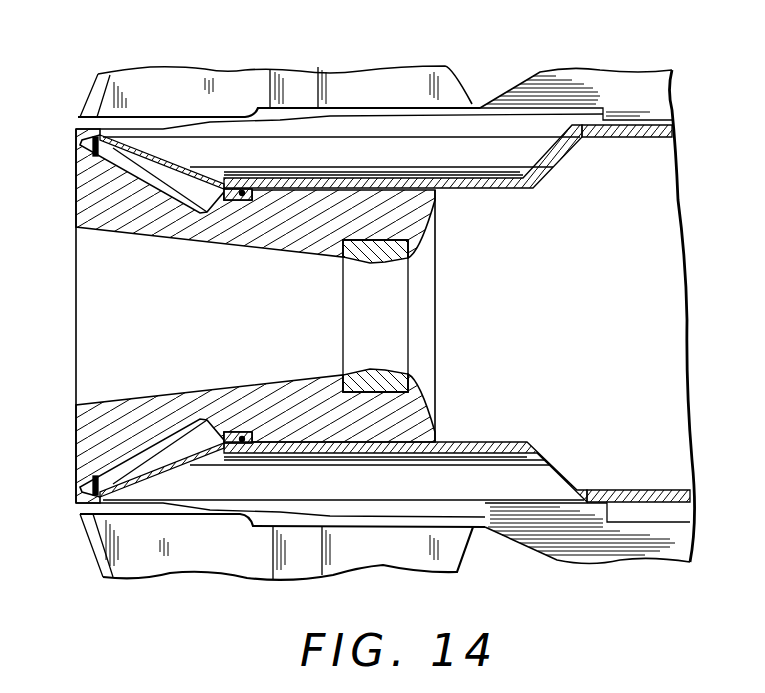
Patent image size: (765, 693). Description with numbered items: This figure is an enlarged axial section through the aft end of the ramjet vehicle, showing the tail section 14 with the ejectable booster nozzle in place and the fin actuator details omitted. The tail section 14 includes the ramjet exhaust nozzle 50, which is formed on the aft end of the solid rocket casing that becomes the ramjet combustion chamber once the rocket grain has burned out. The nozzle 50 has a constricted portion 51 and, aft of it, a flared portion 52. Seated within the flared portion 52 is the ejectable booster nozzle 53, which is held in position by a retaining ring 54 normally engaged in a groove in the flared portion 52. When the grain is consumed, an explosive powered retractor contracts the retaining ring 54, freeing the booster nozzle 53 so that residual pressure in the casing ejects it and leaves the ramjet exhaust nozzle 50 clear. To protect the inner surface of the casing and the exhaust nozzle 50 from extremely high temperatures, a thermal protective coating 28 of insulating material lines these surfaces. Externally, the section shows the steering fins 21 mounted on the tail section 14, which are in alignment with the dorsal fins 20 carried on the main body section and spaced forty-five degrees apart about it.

The tail section 14 is at (484, 101).
The dorsal fins 20 is at (569, 70).
The steering fins 21 is at (190, 70).
The thermal protective coating 28 is at (570, 148).
The ramjet exhaust nozzle 50 is at (344, 167).
The constricted portion 51 is at (467, 177).
The flared portion 52 is at (192, 167).
The ejectable booster nozzle 53 is at (147, 233).
The retaining ring 54 is at (93, 147).